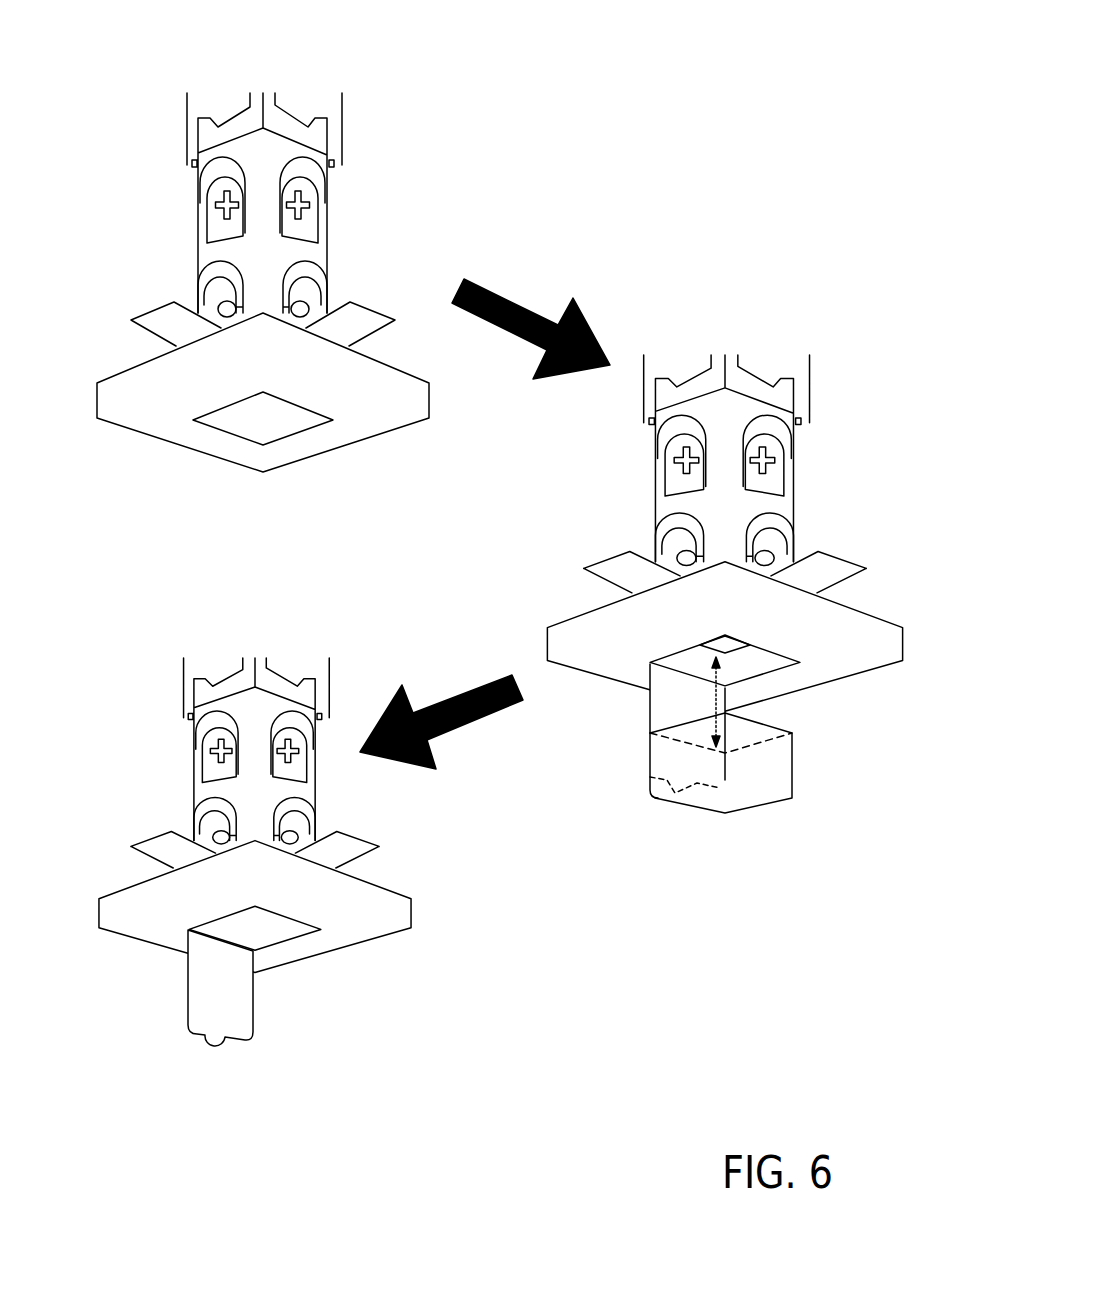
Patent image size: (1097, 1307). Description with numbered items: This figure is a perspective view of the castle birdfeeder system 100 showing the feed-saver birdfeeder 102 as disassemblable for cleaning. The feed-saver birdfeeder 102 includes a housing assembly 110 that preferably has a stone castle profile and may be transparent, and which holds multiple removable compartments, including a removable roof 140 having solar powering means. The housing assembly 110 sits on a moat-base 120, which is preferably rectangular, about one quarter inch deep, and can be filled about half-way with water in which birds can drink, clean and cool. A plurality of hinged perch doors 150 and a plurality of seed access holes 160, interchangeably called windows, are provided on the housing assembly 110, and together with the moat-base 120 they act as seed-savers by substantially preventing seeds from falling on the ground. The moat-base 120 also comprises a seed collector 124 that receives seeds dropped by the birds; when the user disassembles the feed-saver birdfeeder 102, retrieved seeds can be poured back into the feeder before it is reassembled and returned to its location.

The castle birdfeeder system 100 is at (738, 309).
The feed-saver birdfeeder 102 is at (738, 338).
The housing assembly 110 is at (750, 390).
The moat-base 120 is at (209, 381).
The seed collector 124 is at (797, 773).
The removable roof 140 is at (298, 125).
The hinged perch doors 150 is at (372, 312).
The seed access holes 160 is at (297, 830).